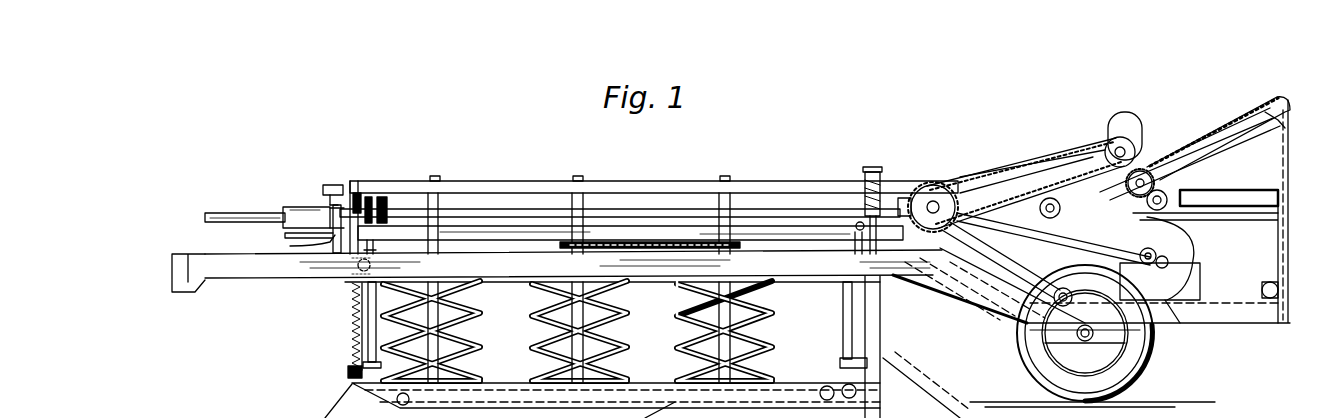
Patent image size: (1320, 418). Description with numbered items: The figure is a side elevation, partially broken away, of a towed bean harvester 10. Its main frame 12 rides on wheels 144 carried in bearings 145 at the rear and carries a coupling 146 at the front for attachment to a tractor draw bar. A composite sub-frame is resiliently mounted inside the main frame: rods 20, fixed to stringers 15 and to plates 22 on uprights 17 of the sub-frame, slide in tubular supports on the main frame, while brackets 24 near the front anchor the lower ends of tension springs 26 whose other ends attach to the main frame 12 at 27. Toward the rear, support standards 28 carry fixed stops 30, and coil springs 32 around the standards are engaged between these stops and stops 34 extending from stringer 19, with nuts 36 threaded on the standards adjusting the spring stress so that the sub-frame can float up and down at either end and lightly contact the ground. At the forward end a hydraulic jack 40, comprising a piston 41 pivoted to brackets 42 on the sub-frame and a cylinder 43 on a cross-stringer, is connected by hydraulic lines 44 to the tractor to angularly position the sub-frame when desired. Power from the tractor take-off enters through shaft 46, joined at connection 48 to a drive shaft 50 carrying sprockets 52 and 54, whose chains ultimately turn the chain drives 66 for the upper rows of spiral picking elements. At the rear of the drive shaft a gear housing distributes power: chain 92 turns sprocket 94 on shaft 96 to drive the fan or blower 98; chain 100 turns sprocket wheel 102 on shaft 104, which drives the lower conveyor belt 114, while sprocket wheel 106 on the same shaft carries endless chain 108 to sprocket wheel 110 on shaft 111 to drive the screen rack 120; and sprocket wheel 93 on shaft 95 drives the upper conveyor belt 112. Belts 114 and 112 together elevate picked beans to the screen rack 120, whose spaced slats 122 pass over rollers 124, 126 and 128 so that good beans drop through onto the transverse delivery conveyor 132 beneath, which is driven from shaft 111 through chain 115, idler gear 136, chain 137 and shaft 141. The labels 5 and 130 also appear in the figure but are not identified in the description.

The bean harvester 10 is at (283, 351).
The main frame 12 is at (322, 270).
The stringers 15 is at (760, 228).
The uprights 17 is at (884, 372).
The stringer 19 is at (680, 188).
The rods 20 is at (378, 320).
The plates 22 is at (376, 362).
The brackets 24 is at (348, 373).
The tension springs 26 is at (351, 332).
The spring attachment point 27 is at (350, 280).
The support standards 28 is at (858, 224).
The stops 30 is at (908, 200).
The coil springs 32 is at (866, 196).
The stops 34 is at (884, 190).
The nuts 36 is at (878, 170).
The hydraulic jacks 40 is at (334, 206).
The piston 41 is at (328, 183).
The brackets 42 is at (332, 184).
The cylinder 43 is at (292, 246).
The hydraulic lines 44 is at (285, 236).
The shaft 46 is at (230, 214).
The connection 48 is at (302, 212).
The drive shaft 50 is at (500, 212).
The sprocket 52 is at (369, 197).
The sprocket 54 is at (386, 200).
The chain drives 66 is at (685, 248).
The chain 92 is at (1001, 260).
The sprocket wheel 93 is at (1135, 118).
The sprocket 94 is at (1185, 258).
The shaft 95 is at (1122, 118).
The shaft 96 is at (1178, 307).
The fan or blower 98 is at (1200, 264).
The chain 100 is at (1035, 165).
The sprocket wheel 102 is at (1096, 148).
The shaft 104 is at (1136, 148).
The sprocket wheel 106 is at (1145, 170).
The endless chain 108 is at (1160, 176).
The sprocket wheel 110 is at (1190, 159).
The shaft 111 is at (1180, 185).
The upper conveyor belt 112 is at (895, 285).
The lower conveyor belt 114 is at (958, 335).
The chain 115 is at (1160, 246).
The screen rack 120 is at (1232, 122).
The slats 122 is at (1190, 146).
The roller 124 is at (1270, 122).
The roller 126 is at (1262, 291).
The roller 128 is at (1072, 296).
The frame bar 130 is at (1250, 222).
The delivery conveyor 132 is at (1250, 196).
The idler gear 136 is at (1135, 244).
The chain 137 is at (1205, 235).
The shaft 141 is at (1232, 187).
The wheels 144 is at (1160, 352).
The bearings 145 is at (1075, 342).
The coupling 146 is at (186, 288).
The section line 5 is at (827, 237).